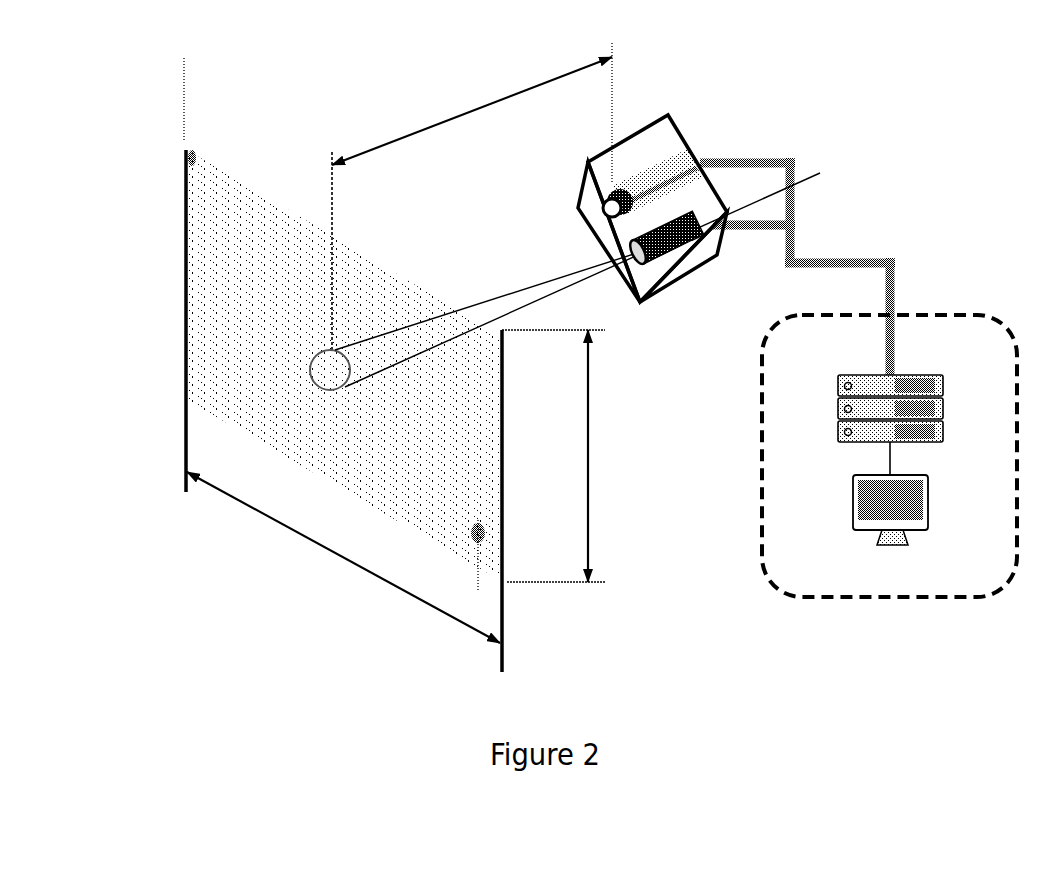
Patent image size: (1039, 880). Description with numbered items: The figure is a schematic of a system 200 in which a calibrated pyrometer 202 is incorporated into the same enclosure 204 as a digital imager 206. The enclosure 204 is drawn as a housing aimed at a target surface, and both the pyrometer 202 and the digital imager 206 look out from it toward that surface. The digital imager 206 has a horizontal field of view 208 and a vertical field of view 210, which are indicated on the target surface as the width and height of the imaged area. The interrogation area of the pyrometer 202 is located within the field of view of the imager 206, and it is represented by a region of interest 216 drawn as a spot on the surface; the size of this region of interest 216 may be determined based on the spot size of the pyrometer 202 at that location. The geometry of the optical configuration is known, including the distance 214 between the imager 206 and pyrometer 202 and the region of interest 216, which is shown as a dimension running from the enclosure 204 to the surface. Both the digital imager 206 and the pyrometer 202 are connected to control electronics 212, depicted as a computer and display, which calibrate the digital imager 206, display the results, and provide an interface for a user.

The system 200 is at (95, 76).
The calibrated pyrometer 202 is at (820, 173).
The enclosure 204 is at (689, 170).
The digital imager 206 is at (672, 152).
The horizontal field of view 208 is at (348, 560).
The vertical field of view 210 is at (590, 484).
The control electronics 212 is at (996, 360).
The distance 214 is at (506, 97).
The region of interest 216 is at (307, 367).